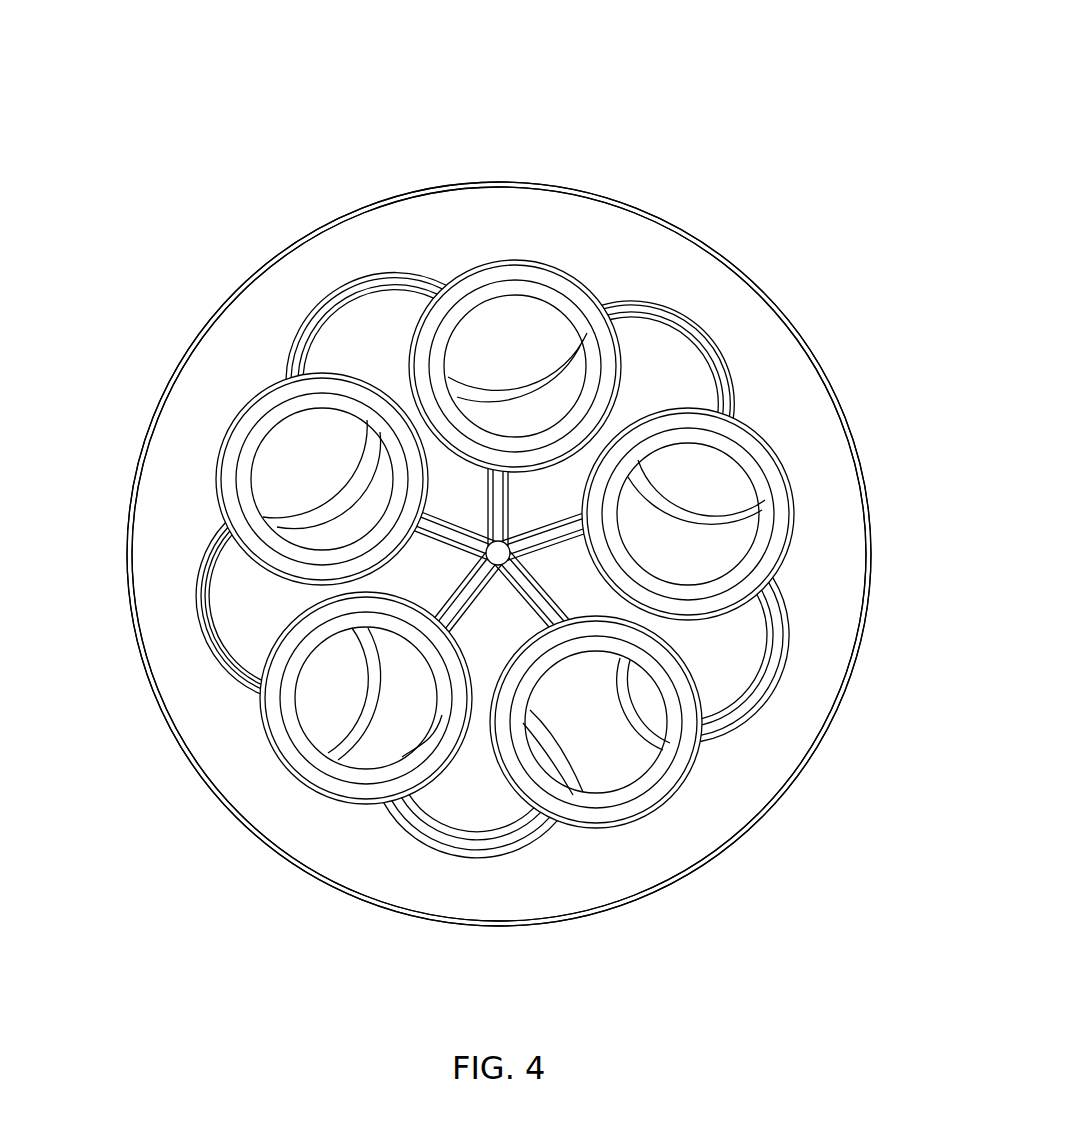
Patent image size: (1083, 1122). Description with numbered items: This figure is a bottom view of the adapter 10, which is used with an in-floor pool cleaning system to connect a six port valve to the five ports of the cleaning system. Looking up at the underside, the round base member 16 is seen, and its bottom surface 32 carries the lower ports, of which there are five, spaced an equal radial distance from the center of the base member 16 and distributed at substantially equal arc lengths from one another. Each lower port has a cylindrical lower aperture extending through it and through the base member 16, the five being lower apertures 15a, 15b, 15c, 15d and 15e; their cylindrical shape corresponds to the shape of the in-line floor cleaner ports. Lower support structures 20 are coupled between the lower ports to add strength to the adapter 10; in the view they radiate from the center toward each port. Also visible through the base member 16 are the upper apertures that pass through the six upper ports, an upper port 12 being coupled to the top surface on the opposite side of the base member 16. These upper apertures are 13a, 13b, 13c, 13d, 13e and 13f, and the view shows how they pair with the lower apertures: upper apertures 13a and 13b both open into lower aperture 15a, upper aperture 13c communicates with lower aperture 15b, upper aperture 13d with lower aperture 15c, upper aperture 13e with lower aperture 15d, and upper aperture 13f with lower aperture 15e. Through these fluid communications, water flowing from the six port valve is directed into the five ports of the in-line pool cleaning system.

The adapter 10 is at (623, 93).
The upper port 12 is at (479, 277).
The upper aperture 13a is at (556, 764).
The upper aperture 13b is at (650, 708).
The upper aperture 13c is at (706, 486).
The upper aperture 13d is at (503, 322).
The upper aperture 13e is at (300, 440).
The upper aperture 13f is at (378, 720).
The lower aperture 15a is at (608, 742).
The lower aperture 15b is at (676, 555).
The lower aperture 15c is at (538, 415).
The lower aperture 15d is at (338, 520).
The lower aperture 15e is at (318, 688).
The base member 16 is at (382, 232).
The lower support structures 20 is at (535, 608).
The bottom surface 32 is at (338, 277).